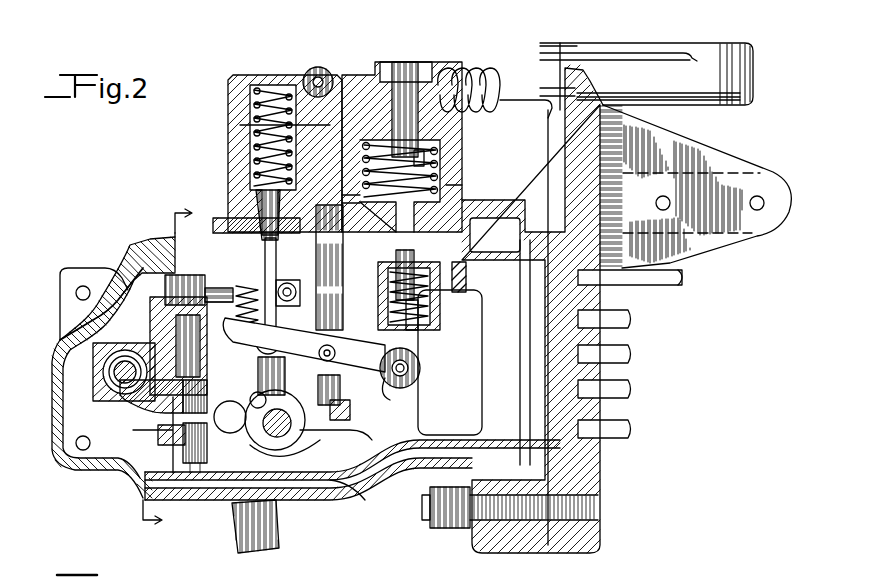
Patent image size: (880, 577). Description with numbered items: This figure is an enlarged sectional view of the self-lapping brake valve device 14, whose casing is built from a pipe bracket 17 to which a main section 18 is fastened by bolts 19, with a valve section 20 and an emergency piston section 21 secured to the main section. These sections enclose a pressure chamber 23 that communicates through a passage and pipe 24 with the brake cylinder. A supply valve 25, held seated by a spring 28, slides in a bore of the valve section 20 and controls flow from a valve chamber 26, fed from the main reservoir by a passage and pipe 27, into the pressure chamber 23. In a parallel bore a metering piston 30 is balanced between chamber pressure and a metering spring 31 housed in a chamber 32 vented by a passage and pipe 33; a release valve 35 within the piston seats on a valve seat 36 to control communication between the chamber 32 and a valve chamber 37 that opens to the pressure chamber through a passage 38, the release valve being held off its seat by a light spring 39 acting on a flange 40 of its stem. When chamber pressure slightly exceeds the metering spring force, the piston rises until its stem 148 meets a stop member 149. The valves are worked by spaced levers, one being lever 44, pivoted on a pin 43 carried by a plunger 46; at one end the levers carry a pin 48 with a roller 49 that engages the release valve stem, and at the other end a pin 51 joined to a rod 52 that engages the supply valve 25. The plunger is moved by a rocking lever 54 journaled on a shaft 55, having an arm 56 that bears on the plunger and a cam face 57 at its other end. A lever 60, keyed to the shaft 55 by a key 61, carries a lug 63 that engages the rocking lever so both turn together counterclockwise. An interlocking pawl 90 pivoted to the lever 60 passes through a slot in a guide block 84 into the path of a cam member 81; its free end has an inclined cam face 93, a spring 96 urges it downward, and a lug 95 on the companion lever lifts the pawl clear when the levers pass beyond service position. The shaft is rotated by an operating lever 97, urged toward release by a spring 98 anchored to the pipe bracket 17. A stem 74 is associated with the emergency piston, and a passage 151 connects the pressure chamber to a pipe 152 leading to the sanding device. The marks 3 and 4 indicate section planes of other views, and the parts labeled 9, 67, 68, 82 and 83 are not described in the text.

The section line 3- 3 is at (150, 367).
The lever 4 is at (75, 352).
The pivot pin 9 is at (290, 283).
The brake valve device 14 is at (280, 72).
The pipe bracket 17 is at (598, 483).
The main section 18 is at (404, 478).
The bolts 19 is at (462, 530).
The valve section 20 is at (232, 125).
The emergency piston section 21 is at (128, 478).
The pressure chamber 23 is at (467, 362).
The passage and pipe 24 is at (606, 352).
The supply valve 25 is at (256, 195).
The valve chamber 26 is at (262, 205).
The passage and pipe 27 is at (634, 300).
The spring 28 is at (236, 95).
The metering piston 30 is at (428, 300).
The metering spring 31 is at (448, 172).
The chamber 32 is at (460, 190).
The passage and pipe 33 is at (606, 318).
The release valve 35 is at (440, 297).
The valve seat 36 is at (478, 246).
The valve chamber 37 is at (486, 285).
The passage 38 is at (434, 340).
The light spring 39 is at (432, 372).
The flange 40 is at (420, 372).
The pin 43 is at (318, 390).
The lever 44 is at (412, 392).
The plunger 46 is at (350, 410).
The pin 48 is at (410, 385).
The roller 49 is at (418, 378).
The pin 51 is at (258, 352).
The rod 52 is at (262, 236).
The rocking lever 54 is at (292, 455).
The shaft 55 is at (258, 442).
The arm 56 is at (344, 440).
The cam face 57 is at (180, 432).
The lever 60 is at (316, 283).
The key 61 is at (230, 417).
The lug 63 is at (250, 402).
The plate 67 is at (332, 502).
The tube 68 is at (606, 390).
The stem 74 is at (115, 385).
The cam member 81 is at (151, 426).
The bore 82 is at (100, 350).
The block 83 is at (188, 330).
The guide block 84 is at (190, 450).
The pawl 90 is at (236, 298).
The inclined cam face 93 is at (256, 340).
The lug 95 is at (205, 290).
The spring 96 is at (247, 300).
The operating lever 97 is at (320, 68).
The spring 98 is at (470, 80).
The stem 148 is at (446, 158).
The stop member 149 is at (400, 95).
The passage 151 is at (213, 500).
The pipe 152 is at (606, 432).